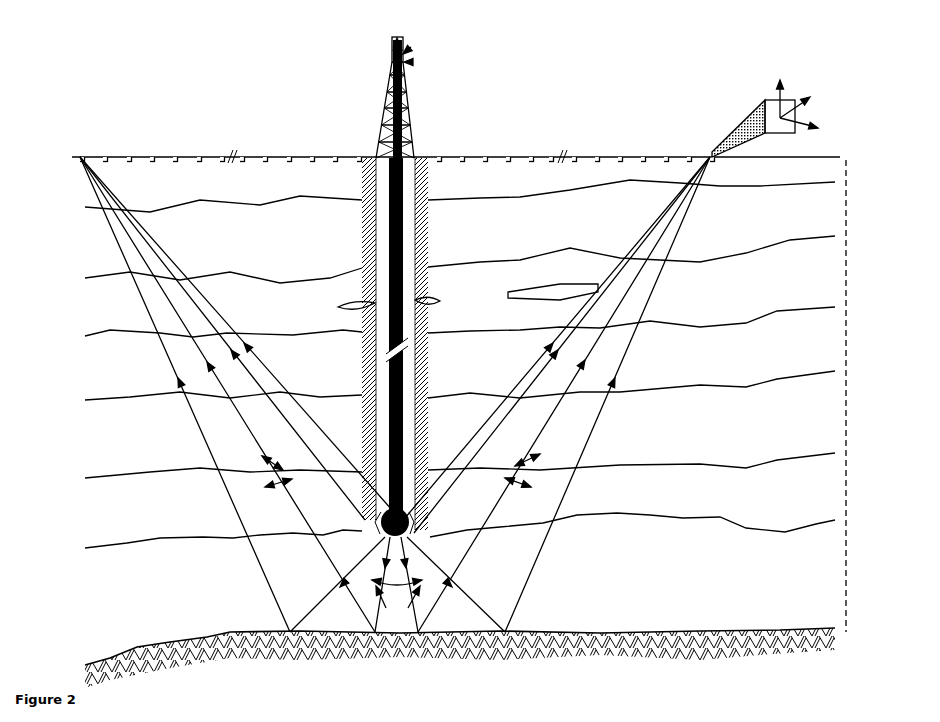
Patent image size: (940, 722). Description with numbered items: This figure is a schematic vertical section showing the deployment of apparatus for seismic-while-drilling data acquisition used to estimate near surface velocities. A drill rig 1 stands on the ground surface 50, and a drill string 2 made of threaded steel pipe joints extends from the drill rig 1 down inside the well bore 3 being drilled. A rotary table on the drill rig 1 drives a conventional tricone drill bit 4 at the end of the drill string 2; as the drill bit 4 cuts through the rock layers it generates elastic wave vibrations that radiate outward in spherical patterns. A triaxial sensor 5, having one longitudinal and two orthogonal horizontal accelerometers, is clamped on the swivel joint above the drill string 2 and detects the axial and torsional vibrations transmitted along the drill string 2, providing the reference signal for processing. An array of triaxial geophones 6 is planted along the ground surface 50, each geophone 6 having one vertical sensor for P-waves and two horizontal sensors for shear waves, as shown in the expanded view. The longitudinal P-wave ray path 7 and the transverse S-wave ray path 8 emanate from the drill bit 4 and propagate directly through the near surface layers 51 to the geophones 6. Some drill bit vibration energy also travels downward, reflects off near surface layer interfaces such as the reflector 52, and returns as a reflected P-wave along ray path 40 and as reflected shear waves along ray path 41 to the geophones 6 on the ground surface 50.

The drill rig 1 is at (403, 110).
The drill string 2 is at (406, 248).
The well bore 3 is at (421, 321).
The drill bit 4 is at (414, 526).
The triaxial sensor 5 is at (401, 47).
The triaxial geophones 6 is at (457, 112).
The P-wave ray path 7 is at (395, 345).
The S-wave ray path 8 is at (395, 337).
The reflected P-wave ray path 40 is at (395, 394).
The reflected S-wave ray path 41 is at (395, 394).
The ground surface 50 is at (828, 156).
The near surface layers 51 is at (847, 397).
The reflector 52 is at (468, 651).